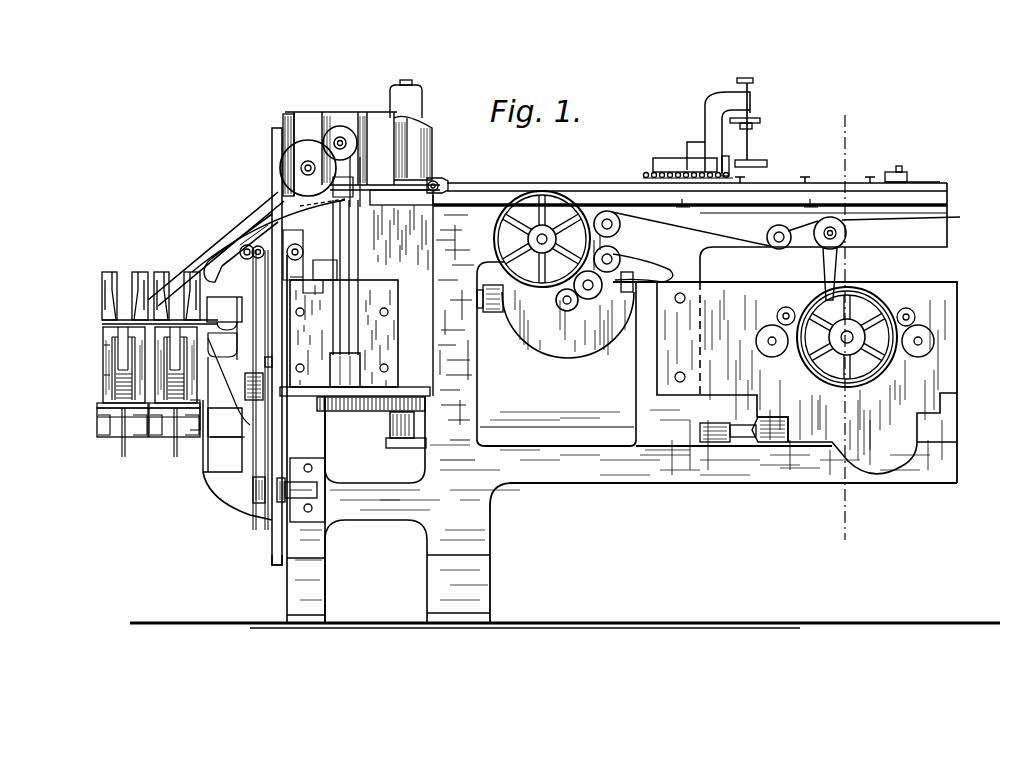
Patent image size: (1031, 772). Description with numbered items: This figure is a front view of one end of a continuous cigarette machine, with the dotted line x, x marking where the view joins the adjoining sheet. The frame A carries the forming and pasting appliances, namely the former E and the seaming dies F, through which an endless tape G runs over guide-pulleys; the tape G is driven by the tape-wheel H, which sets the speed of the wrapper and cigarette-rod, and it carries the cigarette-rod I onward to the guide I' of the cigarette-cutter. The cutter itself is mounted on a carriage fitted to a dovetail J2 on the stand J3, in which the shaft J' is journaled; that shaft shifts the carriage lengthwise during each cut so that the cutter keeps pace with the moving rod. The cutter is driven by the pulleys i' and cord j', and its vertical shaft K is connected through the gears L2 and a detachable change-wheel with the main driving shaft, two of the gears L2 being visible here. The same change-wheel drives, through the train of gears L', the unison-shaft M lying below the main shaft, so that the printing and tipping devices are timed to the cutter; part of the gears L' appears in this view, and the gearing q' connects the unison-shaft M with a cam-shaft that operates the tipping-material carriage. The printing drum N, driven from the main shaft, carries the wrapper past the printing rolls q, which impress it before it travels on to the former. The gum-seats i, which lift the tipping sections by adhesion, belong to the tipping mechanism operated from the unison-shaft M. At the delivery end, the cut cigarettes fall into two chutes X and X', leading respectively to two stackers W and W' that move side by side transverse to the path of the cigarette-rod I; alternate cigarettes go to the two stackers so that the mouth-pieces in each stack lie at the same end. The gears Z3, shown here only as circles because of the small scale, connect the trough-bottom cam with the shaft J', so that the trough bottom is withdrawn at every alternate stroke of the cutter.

The frame A is at (565, 405).
The unison-shaft M is at (545, 430).
The tape-wheel H is at (492, 238).
The tape G is at (560, 185).
The cigarette-rod I is at (690, 184).
The guide of the cigarette-cutter I' is at (443, 169).
The seaming dies F is at (777, 178).
The former E is at (906, 178).
The junction line x is at (841, 327).
The printing drum N is at (810, 373).
The printing rolls q is at (843, 322).
The gearing q' is at (756, 470).
The gears Z3 is at (313, 112).
The stand J3 is at (340, 117).
The shaft J' is at (355, 112).
The dovetail J2 is at (403, 122).
The vertical shaft K is at (352, 310).
The gears L2 is at (360, 412).
The gears L' is at (396, 441).
The gum-seats i is at (259, 343).
The pulleys i' is at (251, 549).
The chute X is at (246, 246).
The chute X' is at (231, 245).
The stacker W is at (144, 364).
The stacker W' is at (73, 363).
The cord j' is at (211, 460).